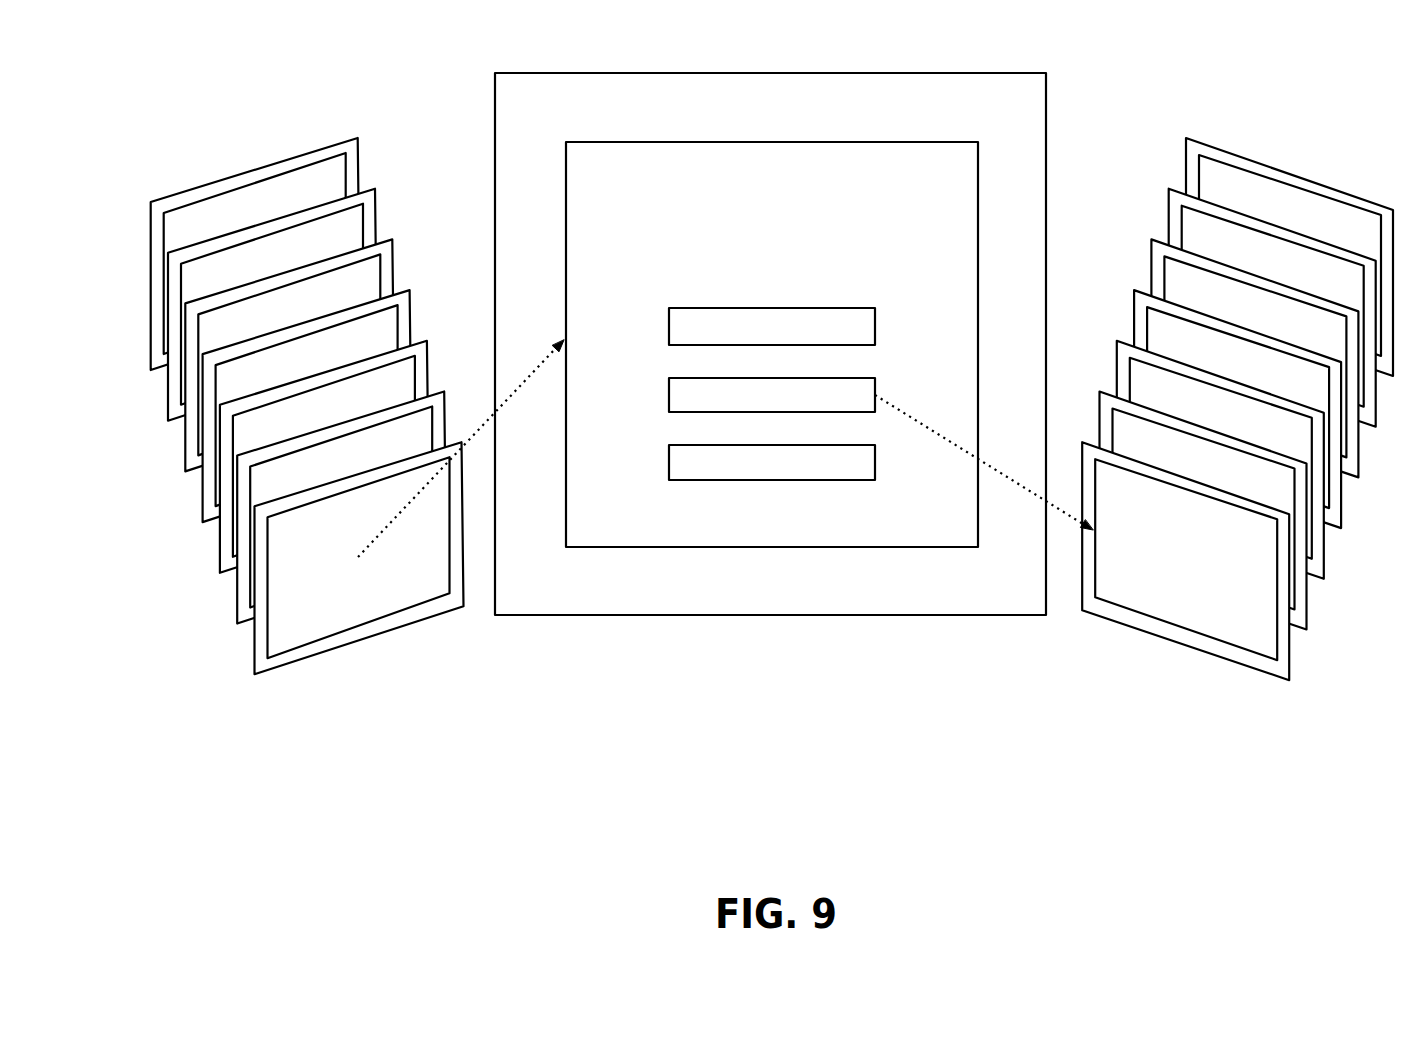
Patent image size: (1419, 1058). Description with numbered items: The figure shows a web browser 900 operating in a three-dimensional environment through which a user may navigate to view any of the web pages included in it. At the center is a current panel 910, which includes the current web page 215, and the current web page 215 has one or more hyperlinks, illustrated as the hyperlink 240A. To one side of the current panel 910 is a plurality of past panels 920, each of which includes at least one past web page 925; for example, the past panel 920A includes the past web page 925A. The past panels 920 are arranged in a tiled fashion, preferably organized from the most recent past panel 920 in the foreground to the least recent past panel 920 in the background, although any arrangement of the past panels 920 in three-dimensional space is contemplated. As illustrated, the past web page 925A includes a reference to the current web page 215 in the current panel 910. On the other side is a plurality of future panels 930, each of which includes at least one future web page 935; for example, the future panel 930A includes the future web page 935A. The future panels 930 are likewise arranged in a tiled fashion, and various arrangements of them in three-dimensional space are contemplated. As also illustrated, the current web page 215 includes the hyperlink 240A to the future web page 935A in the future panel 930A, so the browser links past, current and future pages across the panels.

The web browser 900 is at (771, 469).
The current panel 910 is at (770, 310).
The current web page 215 is at (958, 542).
The hyperlink 240A is at (731, 394).
The past panels 920 is at (245, 226).
The past web page 925 is at (255, 218).
The past panel 920A is at (359, 604).
The past web page 925A is at (368, 589).
The future panels 930 is at (1299, 231).
The future web page 935 is at (1290, 211).
The future panel 930A is at (1185, 603).
The future web page 935A is at (1168, 586).